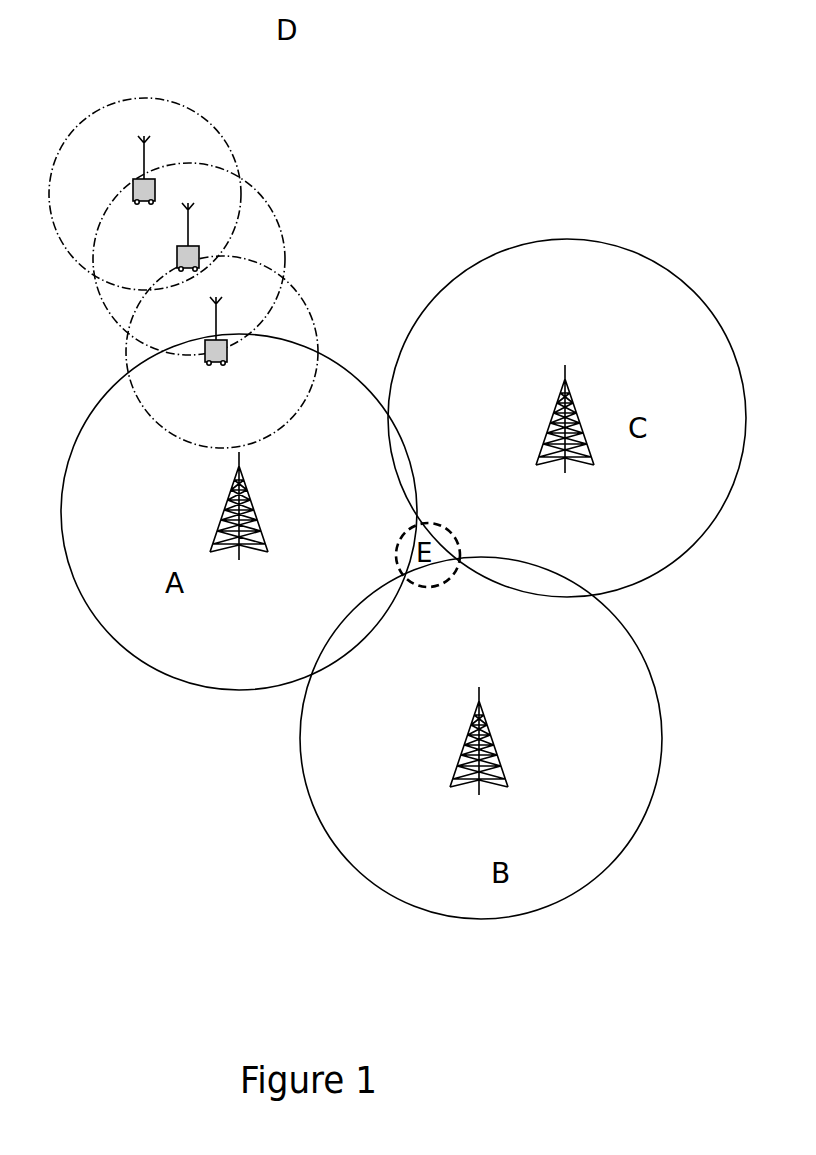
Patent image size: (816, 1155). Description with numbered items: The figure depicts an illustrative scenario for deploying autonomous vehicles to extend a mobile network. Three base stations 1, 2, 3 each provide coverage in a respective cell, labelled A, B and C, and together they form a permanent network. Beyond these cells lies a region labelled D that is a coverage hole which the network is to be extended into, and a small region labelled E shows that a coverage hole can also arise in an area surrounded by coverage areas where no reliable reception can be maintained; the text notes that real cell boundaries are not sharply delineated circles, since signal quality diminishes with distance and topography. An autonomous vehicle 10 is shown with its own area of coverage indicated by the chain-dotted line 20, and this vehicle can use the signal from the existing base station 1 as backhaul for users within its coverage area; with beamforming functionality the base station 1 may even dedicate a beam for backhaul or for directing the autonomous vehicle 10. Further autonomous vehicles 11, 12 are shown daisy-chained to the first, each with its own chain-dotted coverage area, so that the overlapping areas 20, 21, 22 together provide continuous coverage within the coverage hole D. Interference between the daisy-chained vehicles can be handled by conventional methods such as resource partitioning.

The base station 1 is at (233, 504).
The base station 2 is at (506, 741).
The base station 3 is at (557, 418).
The autonomous vehicle 10 is at (238, 333).
The autonomous vehicle 11 is at (174, 237).
The autonomous vehicle 12 is at (130, 170).
The coverage area 20 is at (229, 352).
The coverage area 21 is at (204, 259).
The coverage area 22 is at (145, 177).